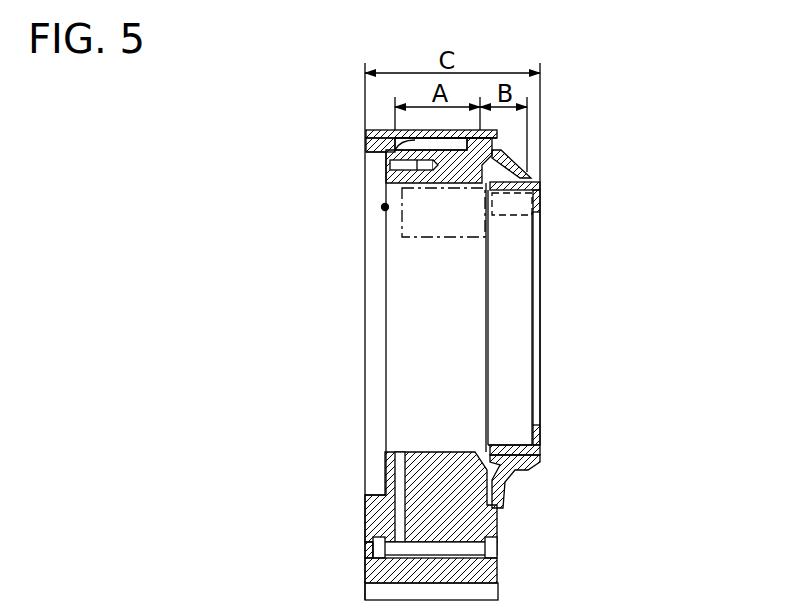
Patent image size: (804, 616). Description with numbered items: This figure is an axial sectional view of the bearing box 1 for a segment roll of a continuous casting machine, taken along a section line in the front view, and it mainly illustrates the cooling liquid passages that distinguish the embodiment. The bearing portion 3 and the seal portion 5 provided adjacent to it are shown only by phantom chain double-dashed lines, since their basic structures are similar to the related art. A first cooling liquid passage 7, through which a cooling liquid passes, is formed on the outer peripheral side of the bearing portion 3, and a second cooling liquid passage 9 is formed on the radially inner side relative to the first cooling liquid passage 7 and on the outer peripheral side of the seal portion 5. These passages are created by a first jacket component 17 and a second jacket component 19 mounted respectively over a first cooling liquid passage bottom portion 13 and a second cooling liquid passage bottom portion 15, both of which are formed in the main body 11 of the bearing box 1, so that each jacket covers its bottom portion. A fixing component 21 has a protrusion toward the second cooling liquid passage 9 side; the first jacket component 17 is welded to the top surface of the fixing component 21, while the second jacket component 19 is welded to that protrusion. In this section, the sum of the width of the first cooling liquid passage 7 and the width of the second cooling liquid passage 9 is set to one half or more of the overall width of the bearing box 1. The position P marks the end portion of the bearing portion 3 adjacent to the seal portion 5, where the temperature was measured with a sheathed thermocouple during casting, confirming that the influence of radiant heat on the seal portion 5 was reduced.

The bearing box 1 is at (663, 80).
The bearing portion 3 is at (427, 238).
The seal portion 5 is at (513, 218).
The first cooling liquid passage 7 is at (430, 147).
The second cooling liquid passage 9 is at (502, 160).
The main body 11 is at (363, 525).
The first cooling liquid passage bottom portion 13 is at (366, 146).
The second cooling liquid passage bottom portion 15 is at (505, 172).
The first jacket component 17 is at (366, 131).
The second jacket component 19 is at (533, 181).
The fixing component 21 is at (455, 139).
The position P is at (379, 207).